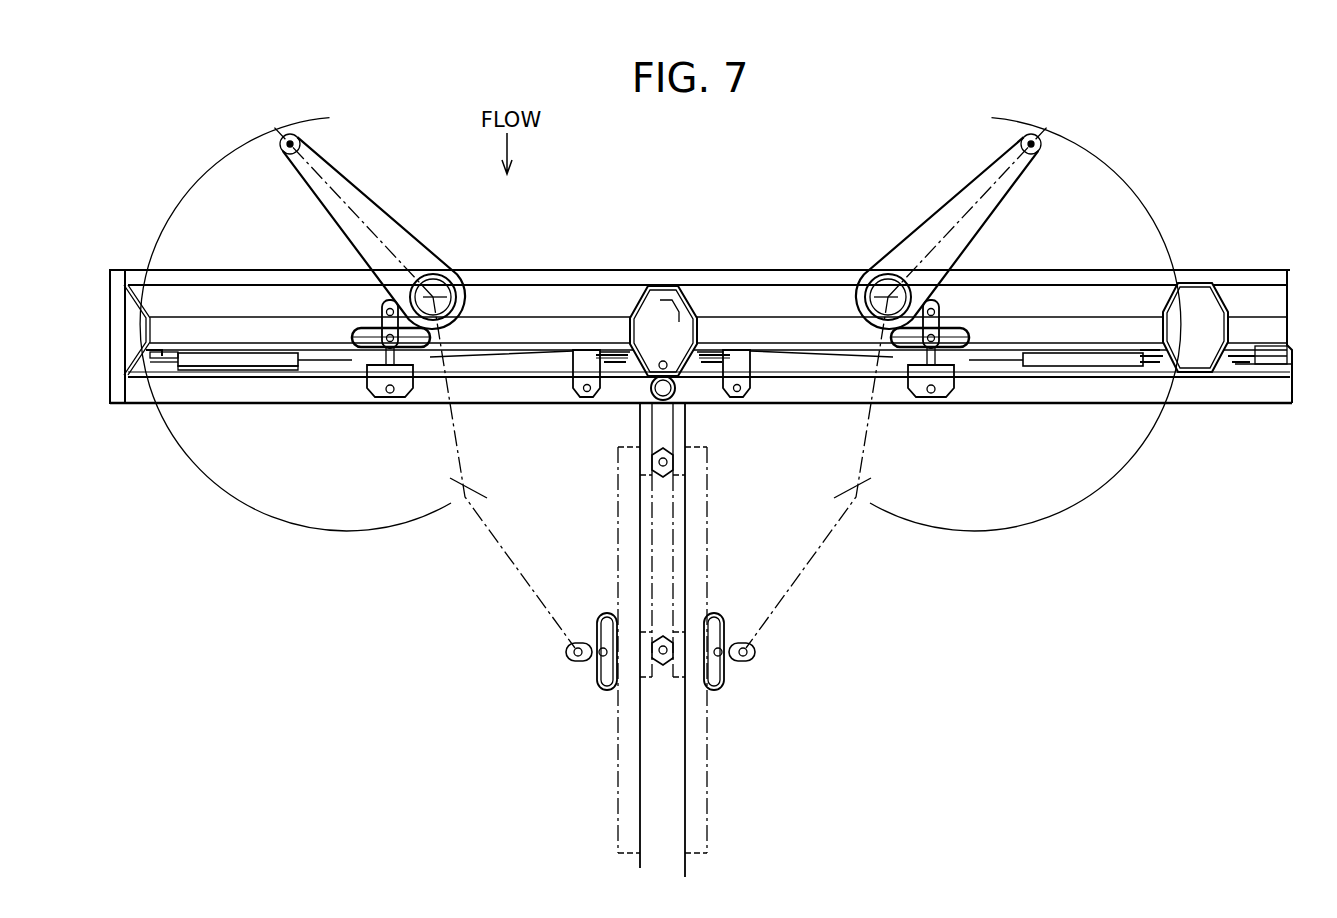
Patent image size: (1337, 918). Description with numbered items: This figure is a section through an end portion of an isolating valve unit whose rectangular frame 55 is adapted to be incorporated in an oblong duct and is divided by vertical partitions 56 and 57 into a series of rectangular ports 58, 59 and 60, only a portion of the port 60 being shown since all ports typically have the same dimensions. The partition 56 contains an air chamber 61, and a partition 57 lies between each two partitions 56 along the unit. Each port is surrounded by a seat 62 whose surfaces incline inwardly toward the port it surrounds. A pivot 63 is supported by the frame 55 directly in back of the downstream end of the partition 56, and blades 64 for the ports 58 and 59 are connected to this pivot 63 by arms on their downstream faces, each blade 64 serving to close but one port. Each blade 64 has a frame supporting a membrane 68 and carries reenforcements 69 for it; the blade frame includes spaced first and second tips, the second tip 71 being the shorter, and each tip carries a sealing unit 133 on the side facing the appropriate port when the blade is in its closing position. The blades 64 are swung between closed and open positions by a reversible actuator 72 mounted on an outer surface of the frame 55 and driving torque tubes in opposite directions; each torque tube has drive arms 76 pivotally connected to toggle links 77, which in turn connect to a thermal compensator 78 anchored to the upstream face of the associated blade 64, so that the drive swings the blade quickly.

The frame 55 is at (1108, 257).
The vertical partition 56 is at (633, 305).
The vertical partition 57 is at (1258, 297).
The rectangular port 58 is at (550, 330).
The rectangular port 59 is at (826, 298).
The rectangular port 60 is at (1263, 358).
The air chamber 61 is at (672, 302).
The seat 62 is at (225, 377).
The pivot 63 is at (648, 392).
The blade 64 is at (248, 357).
The membrane 68 is at (450, 375).
The reenforcement 69 is at (298, 368).
The second tip 71 is at (165, 385).
The reversible actuator 72 is at (170, 355).
The drive arm 76 is at (386, 218).
The toggle link 77 is at (338, 232).
The thermal compensator 78 is at (430, 300).
The sealing unit 133 is at (157, 350).